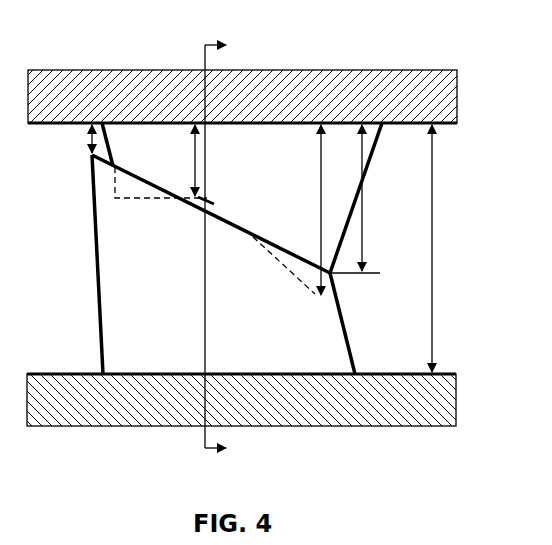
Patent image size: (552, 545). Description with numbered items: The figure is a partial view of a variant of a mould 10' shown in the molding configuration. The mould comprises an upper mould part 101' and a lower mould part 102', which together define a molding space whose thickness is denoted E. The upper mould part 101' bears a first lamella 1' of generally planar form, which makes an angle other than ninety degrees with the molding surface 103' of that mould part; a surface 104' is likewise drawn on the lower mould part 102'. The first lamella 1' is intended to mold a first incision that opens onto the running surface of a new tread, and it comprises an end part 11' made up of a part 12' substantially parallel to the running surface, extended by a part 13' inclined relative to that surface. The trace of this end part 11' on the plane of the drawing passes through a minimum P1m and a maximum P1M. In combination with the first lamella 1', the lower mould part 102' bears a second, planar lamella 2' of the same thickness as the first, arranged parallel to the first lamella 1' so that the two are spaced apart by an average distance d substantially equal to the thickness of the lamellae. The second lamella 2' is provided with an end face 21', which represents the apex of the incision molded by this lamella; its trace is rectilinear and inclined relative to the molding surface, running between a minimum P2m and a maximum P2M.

The mould 10' is at (276, 241).
The upper mould part 101' is at (251, 78).
The molding surface 103' is at (276, 152).
The lower mould part 102' is at (276, 400).
The upper face of lower plate 104' is at (268, 357).
The first lamella 1' is at (333, 248).
The second lamella 2' is at (215, 248).
The end part 11' is at (254, 257).
The part substantially parallel to the running surface 12' is at (87, 264).
The inclined part 13' is at (333, 222).
The end face 21' is at (72, 183).